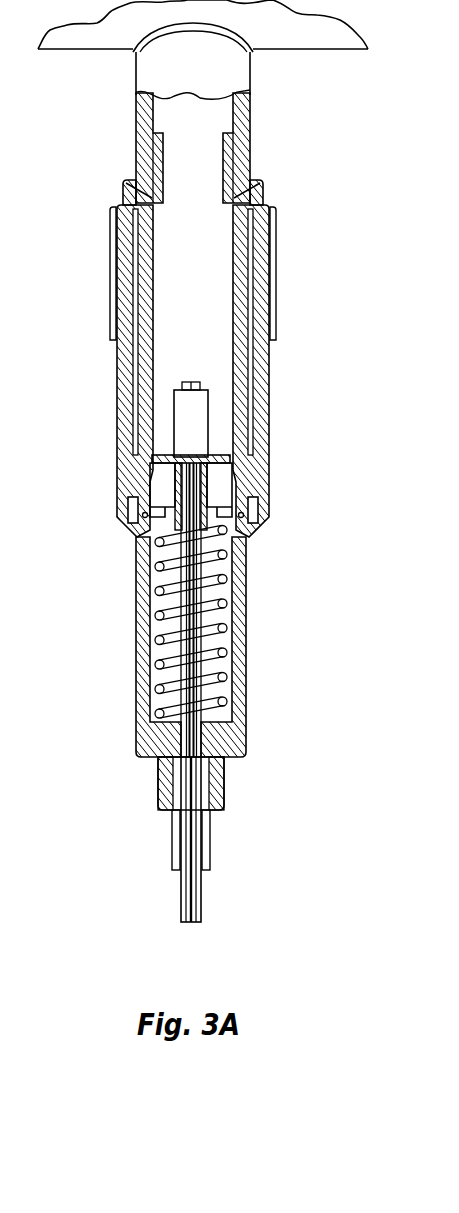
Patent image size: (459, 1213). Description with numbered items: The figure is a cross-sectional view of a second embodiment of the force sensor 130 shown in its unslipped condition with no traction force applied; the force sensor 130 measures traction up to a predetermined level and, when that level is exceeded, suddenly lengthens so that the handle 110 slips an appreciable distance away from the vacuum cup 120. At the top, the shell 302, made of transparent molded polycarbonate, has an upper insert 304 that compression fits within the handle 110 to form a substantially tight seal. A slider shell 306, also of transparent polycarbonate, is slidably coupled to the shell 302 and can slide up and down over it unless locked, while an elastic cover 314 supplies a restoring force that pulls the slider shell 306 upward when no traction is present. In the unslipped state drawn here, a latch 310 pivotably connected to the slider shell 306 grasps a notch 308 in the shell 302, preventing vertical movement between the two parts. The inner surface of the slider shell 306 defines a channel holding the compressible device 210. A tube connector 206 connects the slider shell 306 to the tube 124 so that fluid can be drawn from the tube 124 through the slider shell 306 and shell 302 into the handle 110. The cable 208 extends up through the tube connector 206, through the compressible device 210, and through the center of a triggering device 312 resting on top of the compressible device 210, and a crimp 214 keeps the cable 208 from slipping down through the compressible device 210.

The handle 110 is at (303, 49).
The vacuum cup 120 is at (256, 845).
The tube 124 is at (172, 840).
The force sensor 130 is at (298, 420).
The tube connector 206 is at (158, 780).
The cable 208 is at (201, 903).
The compressible device 210 is at (210, 637).
The crimp 214 is at (197, 413).
The shell 302 is at (147, 368).
The upper insert 304 is at (146, 163).
The slider shell 306 is at (135, 578).
The notch 308 is at (128, 512).
The latch 310 is at (150, 492).
The triggering device 312 is at (165, 455).
The elastic cover 314 is at (110, 250).